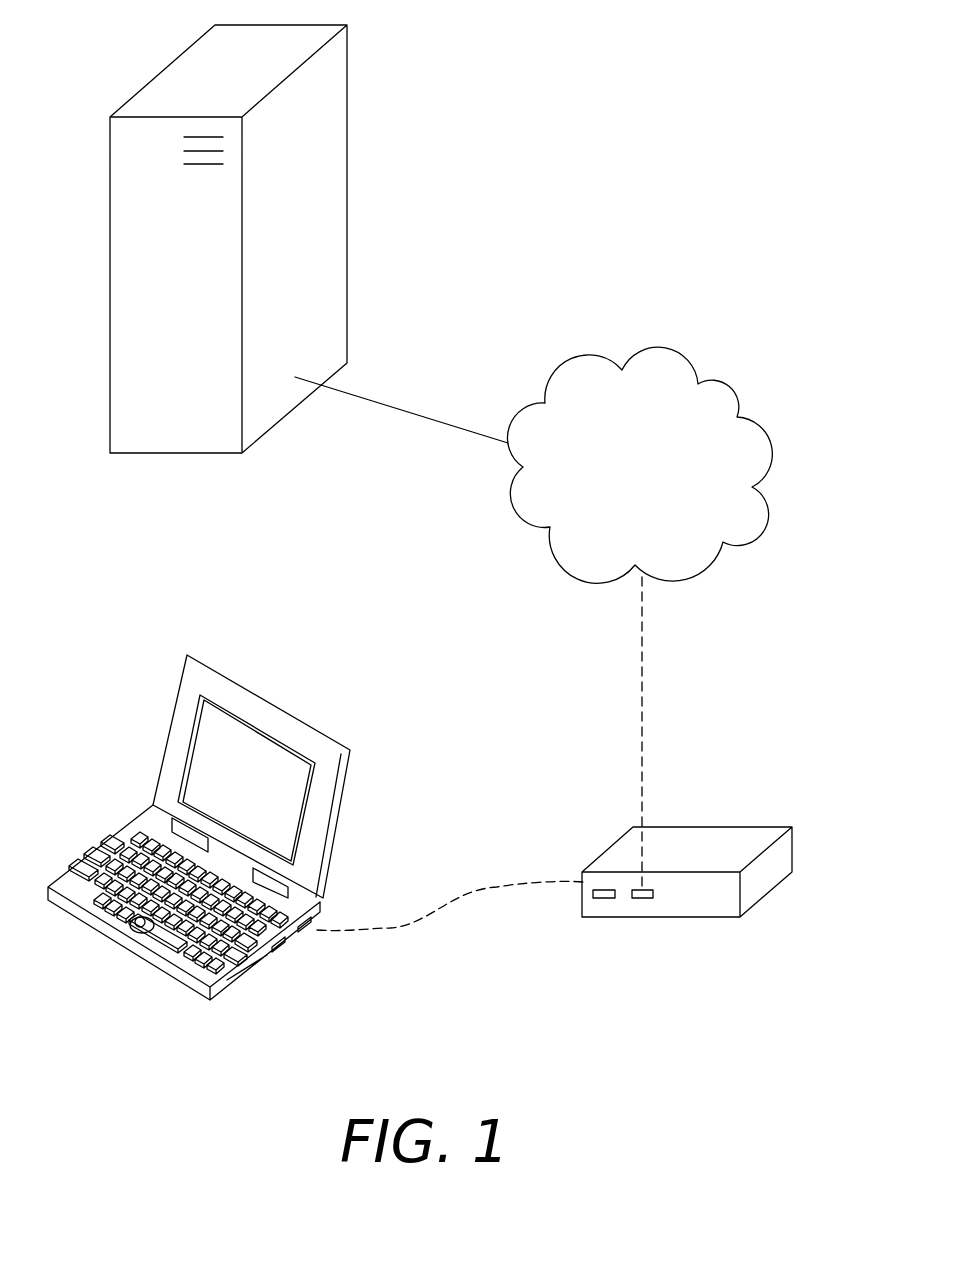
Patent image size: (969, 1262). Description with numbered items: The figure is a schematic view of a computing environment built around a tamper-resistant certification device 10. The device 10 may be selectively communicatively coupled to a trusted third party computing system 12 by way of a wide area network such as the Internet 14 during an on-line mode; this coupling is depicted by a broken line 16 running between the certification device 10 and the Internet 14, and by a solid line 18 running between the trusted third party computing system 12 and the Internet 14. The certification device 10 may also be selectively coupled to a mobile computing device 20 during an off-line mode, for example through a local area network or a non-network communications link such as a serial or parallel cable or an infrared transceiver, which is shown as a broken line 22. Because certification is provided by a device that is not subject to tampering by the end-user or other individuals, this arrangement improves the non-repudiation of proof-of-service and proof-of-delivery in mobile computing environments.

The tamper-resistant certification device 10 is at (792, 848).
The trusted third party computing system 12 is at (347, 140).
The Internet 14 is at (768, 445).
The broken line 16 is at (642, 682).
The solid line 18 is at (385, 403).
The mobile computing device 20 is at (163, 733).
The broken line 22 is at (392, 928).